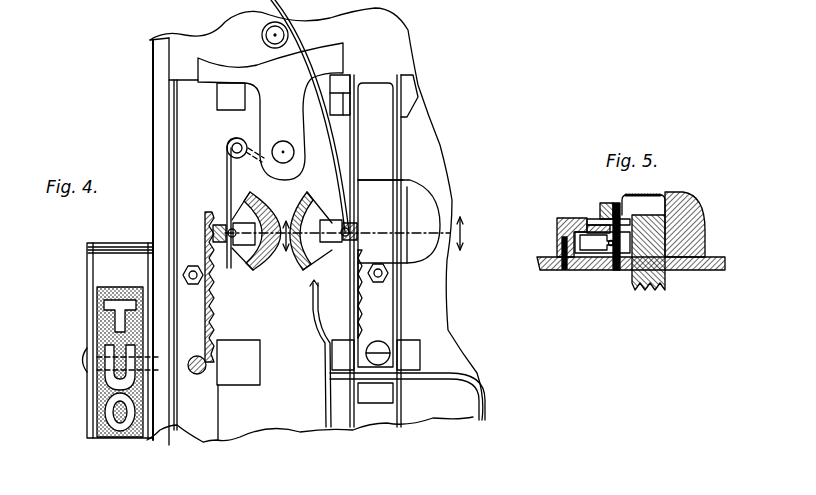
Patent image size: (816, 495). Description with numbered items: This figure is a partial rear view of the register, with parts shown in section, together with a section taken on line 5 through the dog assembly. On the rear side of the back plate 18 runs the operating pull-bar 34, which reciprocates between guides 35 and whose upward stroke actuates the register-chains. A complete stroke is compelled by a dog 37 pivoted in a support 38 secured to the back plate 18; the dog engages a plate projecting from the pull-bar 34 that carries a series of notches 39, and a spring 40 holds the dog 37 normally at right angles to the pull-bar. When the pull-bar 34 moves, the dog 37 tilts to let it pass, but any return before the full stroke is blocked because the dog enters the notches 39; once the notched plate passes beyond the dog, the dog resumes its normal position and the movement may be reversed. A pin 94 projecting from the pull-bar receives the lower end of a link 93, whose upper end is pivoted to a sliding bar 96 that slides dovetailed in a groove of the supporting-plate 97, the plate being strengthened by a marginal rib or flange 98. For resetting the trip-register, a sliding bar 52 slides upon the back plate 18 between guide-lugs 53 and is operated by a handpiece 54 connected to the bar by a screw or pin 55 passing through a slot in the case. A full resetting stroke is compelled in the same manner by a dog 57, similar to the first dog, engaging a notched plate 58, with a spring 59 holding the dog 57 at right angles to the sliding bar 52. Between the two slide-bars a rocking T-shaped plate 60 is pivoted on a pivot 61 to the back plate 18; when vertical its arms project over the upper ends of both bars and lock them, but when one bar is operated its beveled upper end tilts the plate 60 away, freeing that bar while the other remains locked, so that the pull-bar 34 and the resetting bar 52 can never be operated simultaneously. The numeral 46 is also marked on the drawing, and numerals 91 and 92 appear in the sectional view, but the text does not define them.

In FIG. 4, the section line 5 is at (378, 226).
In FIG. 4, the back plate 18 is at (410, 57).
In FIG. 4, the operating pull-bar 34 is at (376, 251).
In FIG. 5, the operating pull-bar 34 is at (643, 210).
In FIG. 4, the guides 35 is at (342, 83).
In FIG. 4, the dog 37 is at (341, 244).
In FIG. 5, the dog 37 is at (626, 255).
In FIG. 4, the support 38 is at (303, 260).
In FIG. 5, the support 38 is at (566, 218).
In FIG. 4, the notches 39 is at (360, 305).
In FIG. 4, the spring 40 is at (340, 179).
In FIG. 5, the spring 40 is at (611, 243).
In FIG. 4, the curved bar 46 is at (473, 386).
In FIG. 4, the sliding bar 52 is at (197, 287).
In FIG. 4, the guide-lugs 53 is at (238, 234).
In FIG. 4, the handpiece 54 is at (120, 340).
In FIG. 4, the screw or pin 55 is at (82, 361).
In FIG. 4, the dog 57 is at (213, 224).
In FIG. 4, the notched plate 58 is at (216, 292).
In FIG. 4, the spring 59 is at (233, 196).
In FIG. 4, the rocking T-shaped plate 60 is at (270, 111).
In FIG. 4, the pivot 61 is at (283, 141).
In FIG. 5, the block 91 is at (605, 204).
In FIG. 5, the plate 92 is at (593, 219).
In FIG. 5, the link 93 is at (617, 203).
In FIG. 4, the pin 94 is at (383, 357).
In FIG. 4, the sliding bar 96 is at (312, 299).
In FIG. 4, the supporting-plate 97 is at (318, 337).
In FIG. 4, the marginal rib or flange 98 is at (359, 321).